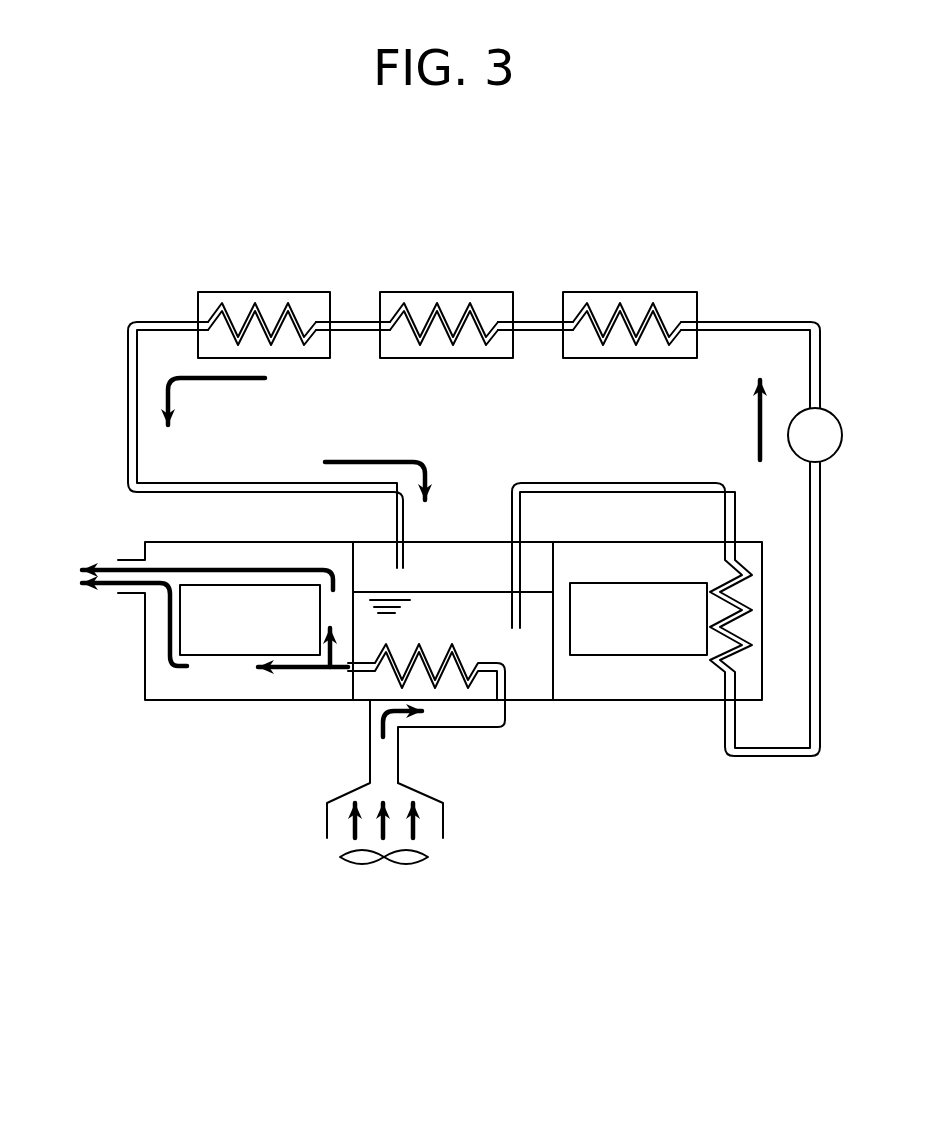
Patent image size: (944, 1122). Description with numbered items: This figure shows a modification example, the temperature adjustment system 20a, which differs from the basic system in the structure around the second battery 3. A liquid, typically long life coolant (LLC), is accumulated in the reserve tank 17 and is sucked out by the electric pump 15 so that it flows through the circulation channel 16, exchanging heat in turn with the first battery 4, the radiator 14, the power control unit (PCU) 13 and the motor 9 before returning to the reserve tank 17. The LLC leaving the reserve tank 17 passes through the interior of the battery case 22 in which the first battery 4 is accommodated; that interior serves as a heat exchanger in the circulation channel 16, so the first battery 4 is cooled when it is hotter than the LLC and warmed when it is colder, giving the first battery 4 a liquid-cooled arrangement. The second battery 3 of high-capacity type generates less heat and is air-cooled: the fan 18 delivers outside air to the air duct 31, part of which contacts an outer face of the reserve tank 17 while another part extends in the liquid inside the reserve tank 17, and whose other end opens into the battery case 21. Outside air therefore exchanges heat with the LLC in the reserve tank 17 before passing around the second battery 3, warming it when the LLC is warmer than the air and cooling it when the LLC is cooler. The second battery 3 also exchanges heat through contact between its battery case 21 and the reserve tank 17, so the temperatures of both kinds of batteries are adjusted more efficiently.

The temperature adjustment system 20a is at (188, 205).
The motor 9 is at (280, 292).
The power control unit 13 is at (462, 292).
The radiator 14 is at (644, 292).
The electric pump 15 is at (832, 412).
The circulation channel 16 is at (626, 483).
The reserve tank 17 is at (460, 540).
The battery case 21 is at (145, 663).
The second battery 3 is at (237, 657).
The battery case 22 is at (677, 702).
The first battery 4 is at (622, 657).
The air duct 31 is at (508, 680).
The fan 18 is at (410, 866).